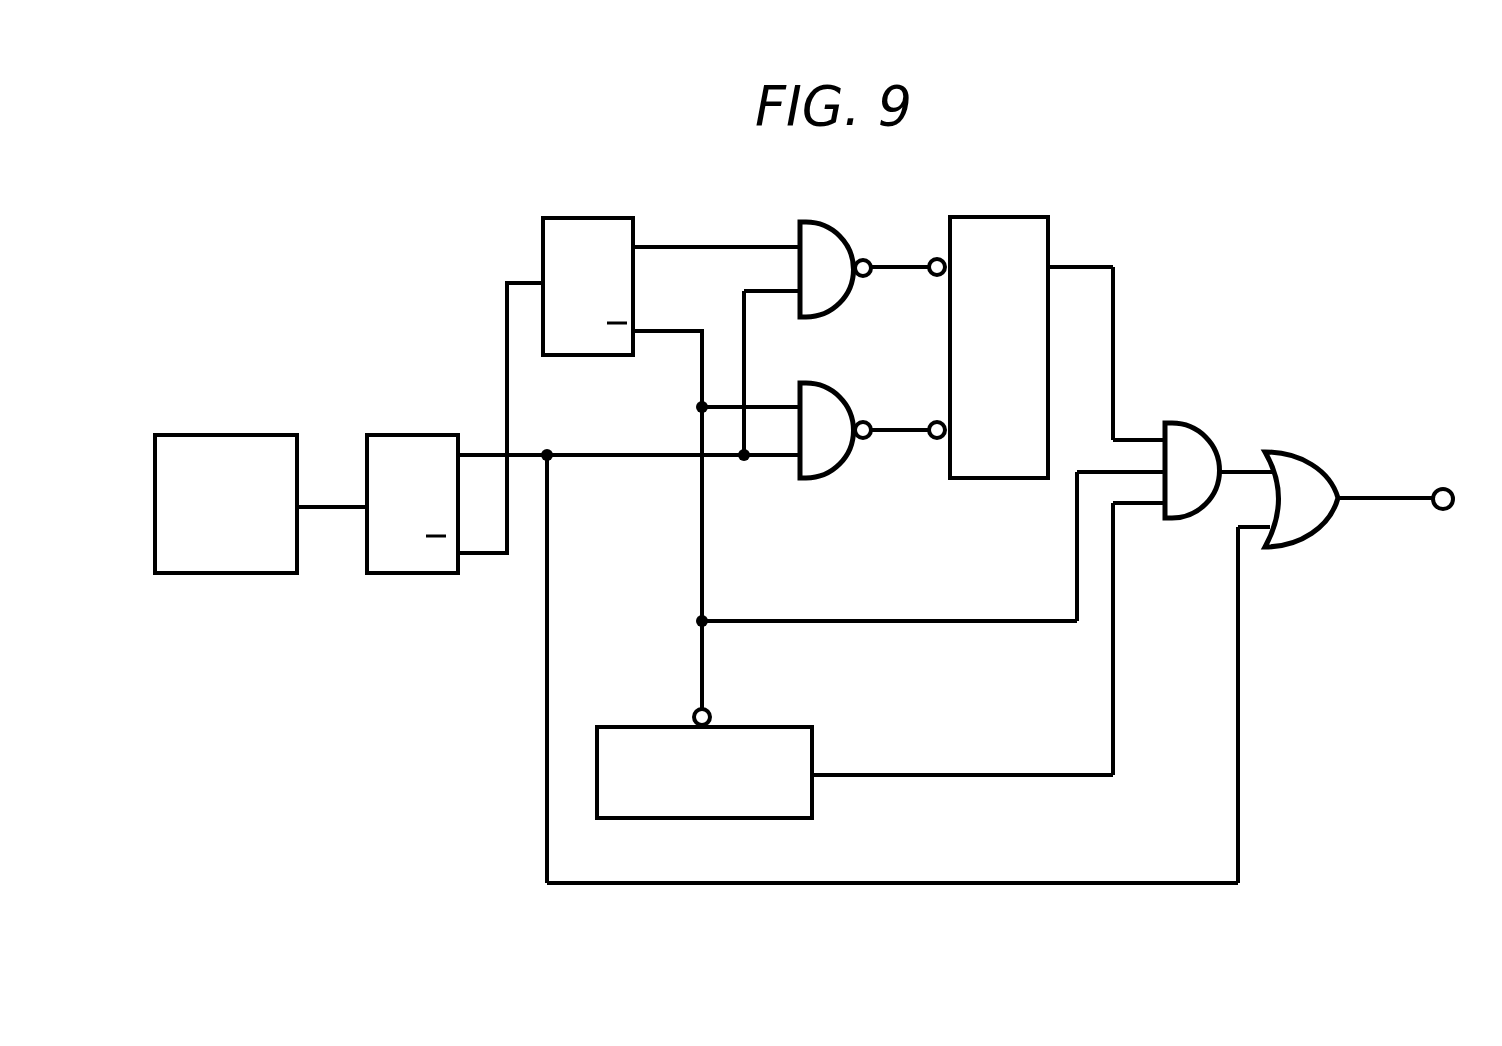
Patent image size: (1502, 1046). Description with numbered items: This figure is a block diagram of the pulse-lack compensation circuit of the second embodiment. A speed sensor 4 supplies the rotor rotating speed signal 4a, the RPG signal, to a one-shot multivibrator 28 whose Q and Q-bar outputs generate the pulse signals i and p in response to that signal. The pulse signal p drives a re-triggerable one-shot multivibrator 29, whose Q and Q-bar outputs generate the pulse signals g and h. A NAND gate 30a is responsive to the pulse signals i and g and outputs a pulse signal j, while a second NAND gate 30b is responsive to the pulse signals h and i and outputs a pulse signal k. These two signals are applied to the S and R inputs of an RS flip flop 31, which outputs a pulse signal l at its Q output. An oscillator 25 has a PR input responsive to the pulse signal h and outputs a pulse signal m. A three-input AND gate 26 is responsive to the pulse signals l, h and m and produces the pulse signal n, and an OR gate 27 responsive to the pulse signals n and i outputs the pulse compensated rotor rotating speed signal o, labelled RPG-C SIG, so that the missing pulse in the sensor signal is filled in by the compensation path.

The speed sensor 4 is at (232, 435).
The rotor rotating speed signal 4a is at (330, 504).
The one-shot multivibrator 28 is at (402, 435).
The re-triggerable one-shot multivibrator 29 is at (562, 218).
The NAND gate 30a is at (808, 222).
The NAND gate 30b is at (808, 383).
The RS flip flop 31 is at (968, 216).
The three-input AND gate 26 is at (1185, 422).
The OR gate 27 is at (1295, 451).
The oscillator 25 is at (737, 727).
The pulse signal g is at (670, 247).
The pulse signal h is at (670, 331).
The pulse signal i is at (482, 455).
The pulse signal j is at (903, 262).
The pulse signal k is at (903, 423).
The pulse signal l is at (1086, 261).
The pulse signal m is at (917, 773).
The pulse signal n is at (1245, 467).
The pulse compensated rotor rotating speed signal o is at (1365, 493).
The pulse signal p is at (482, 553).